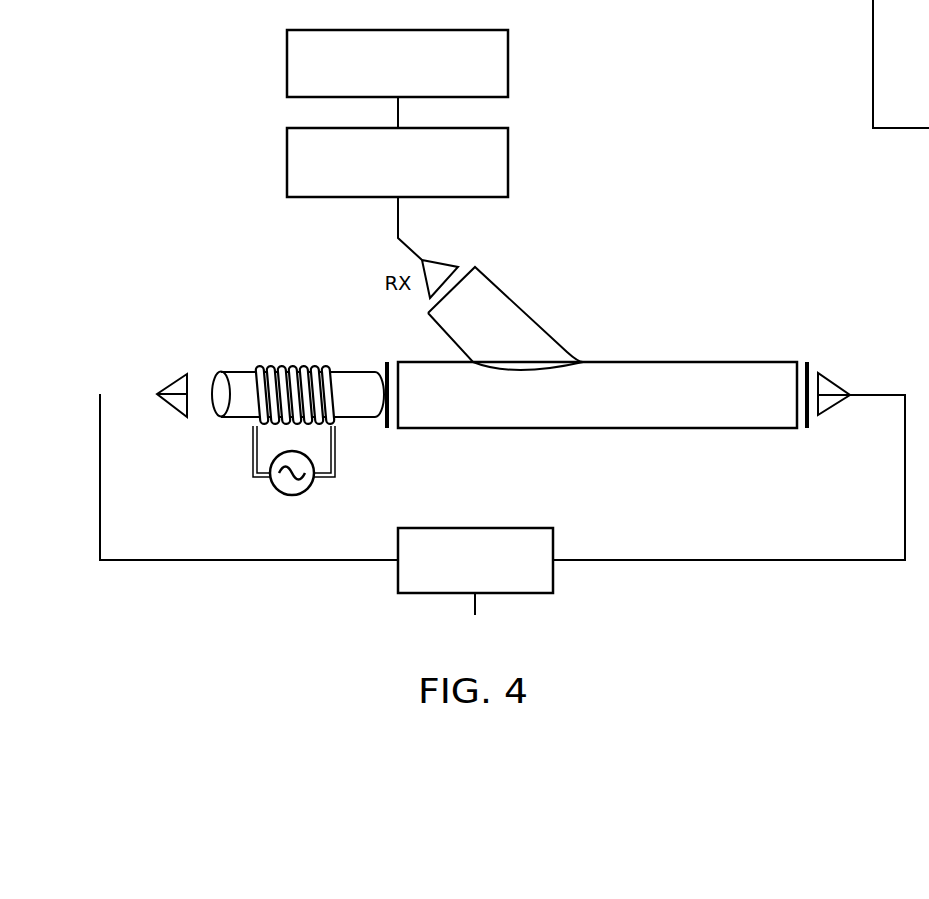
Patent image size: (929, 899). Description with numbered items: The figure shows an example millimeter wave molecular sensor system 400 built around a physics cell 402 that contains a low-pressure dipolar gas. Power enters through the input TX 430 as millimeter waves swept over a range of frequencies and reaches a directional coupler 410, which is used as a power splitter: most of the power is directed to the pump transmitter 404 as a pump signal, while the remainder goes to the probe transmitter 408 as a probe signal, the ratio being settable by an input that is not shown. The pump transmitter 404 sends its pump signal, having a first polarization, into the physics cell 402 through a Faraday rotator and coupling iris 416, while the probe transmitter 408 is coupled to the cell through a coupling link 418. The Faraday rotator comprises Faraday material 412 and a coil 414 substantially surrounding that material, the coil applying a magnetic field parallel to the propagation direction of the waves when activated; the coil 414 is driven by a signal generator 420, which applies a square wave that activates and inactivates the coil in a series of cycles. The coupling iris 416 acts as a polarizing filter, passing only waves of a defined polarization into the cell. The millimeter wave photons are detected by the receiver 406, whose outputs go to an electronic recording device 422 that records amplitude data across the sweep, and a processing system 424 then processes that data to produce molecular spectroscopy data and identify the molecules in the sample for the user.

The millimeter wave molecular sensor system 400 is at (210, 217).
The physics cell 402 is at (641, 361).
The pump transmitter 404 is at (175, 382).
The receiver 406 is at (438, 261).
The probe transmitter 408 is at (832, 381).
The directional coupler 410 is at (452, 528).
The Faraday material 412 is at (244, 371).
The coil 414 is at (252, 452).
The Faraday rotator and coupling iris 416 is at (386, 352).
The coupling link 418 is at (806, 355).
The signal generator 420 is at (290, 496).
The electronic recording device 422 is at (510, 62).
The processing system 424 is at (510, 155).
The input TX 430 is at (462, 632).